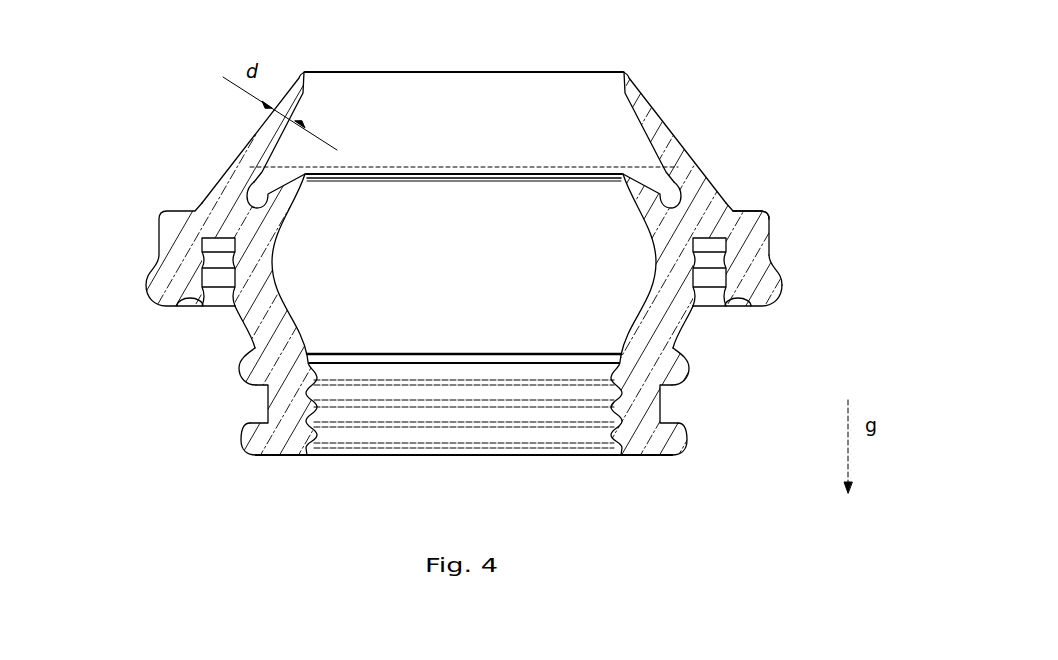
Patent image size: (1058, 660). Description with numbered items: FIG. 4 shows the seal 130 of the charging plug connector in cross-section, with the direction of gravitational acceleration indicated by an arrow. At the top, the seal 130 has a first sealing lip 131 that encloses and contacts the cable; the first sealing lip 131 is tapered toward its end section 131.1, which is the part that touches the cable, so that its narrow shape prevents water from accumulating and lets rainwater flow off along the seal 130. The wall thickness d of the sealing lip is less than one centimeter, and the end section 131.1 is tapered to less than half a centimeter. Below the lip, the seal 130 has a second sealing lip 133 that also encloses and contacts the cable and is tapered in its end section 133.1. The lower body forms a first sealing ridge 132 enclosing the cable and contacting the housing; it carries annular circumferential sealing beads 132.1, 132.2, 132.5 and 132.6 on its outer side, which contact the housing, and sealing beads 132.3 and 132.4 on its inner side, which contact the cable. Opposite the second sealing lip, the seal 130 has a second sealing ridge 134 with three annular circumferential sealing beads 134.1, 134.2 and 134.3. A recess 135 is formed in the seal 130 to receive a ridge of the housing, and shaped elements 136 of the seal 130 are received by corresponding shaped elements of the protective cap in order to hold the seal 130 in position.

The seal 130 is at (127, 52).
The first sealing lip 131 is at (640, 134).
The end section of the first sealing lip 131.1 is at (632, 84).
The first sealing ridge 132 is at (258, 306).
The sealing bead 132.1 is at (254, 440).
The sealing bead 132.2 is at (252, 365).
The sealing bead 132.3 is at (618, 381).
The sealing bead 132.4 is at (613, 378).
The sealing bead 132.5 is at (698, 272).
The sealing bead 132.6 is at (710, 282).
The second sealing lip 133 is at (288, 203).
The end section of the second sealing lip 133.1 is at (258, 178).
The second sealing ridge 134 is at (743, 243).
The sealing bead 134.1 is at (772, 281).
The sealing bead 134.2 is at (730, 258).
The sealing bead 134.3 is at (772, 296).
The recess 135 is at (222, 275).
The shaped element 136 is at (766, 214).